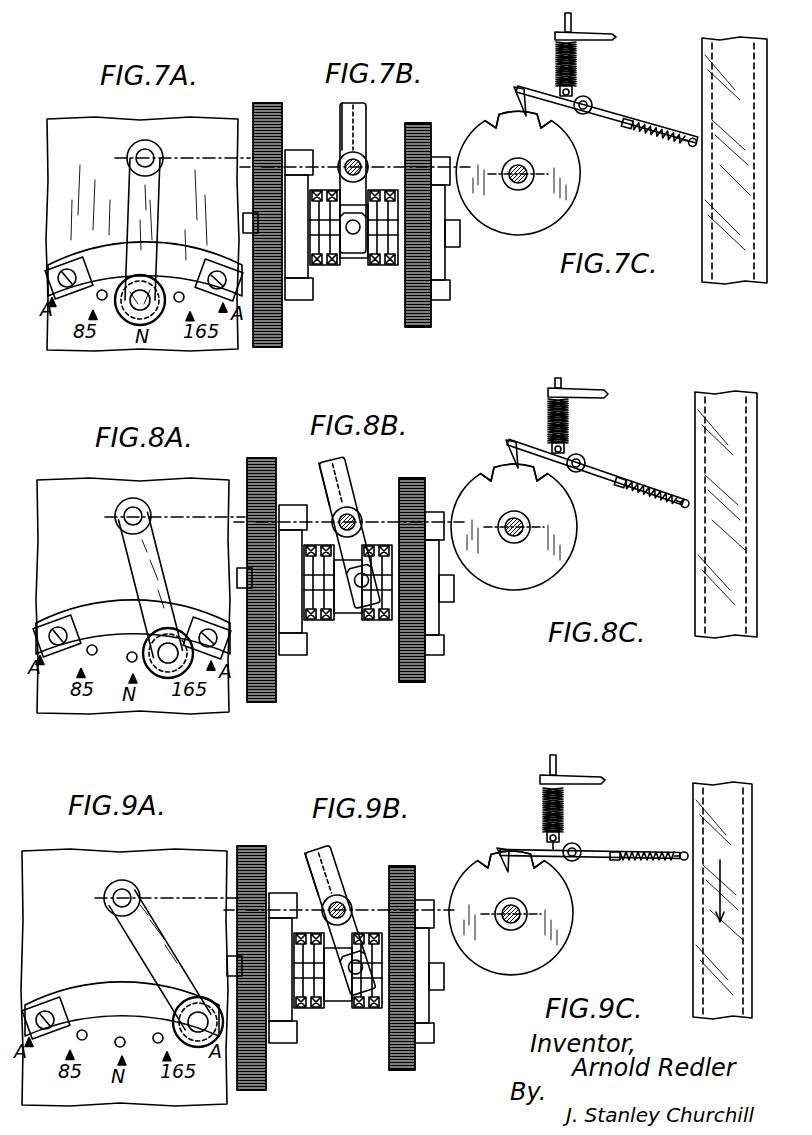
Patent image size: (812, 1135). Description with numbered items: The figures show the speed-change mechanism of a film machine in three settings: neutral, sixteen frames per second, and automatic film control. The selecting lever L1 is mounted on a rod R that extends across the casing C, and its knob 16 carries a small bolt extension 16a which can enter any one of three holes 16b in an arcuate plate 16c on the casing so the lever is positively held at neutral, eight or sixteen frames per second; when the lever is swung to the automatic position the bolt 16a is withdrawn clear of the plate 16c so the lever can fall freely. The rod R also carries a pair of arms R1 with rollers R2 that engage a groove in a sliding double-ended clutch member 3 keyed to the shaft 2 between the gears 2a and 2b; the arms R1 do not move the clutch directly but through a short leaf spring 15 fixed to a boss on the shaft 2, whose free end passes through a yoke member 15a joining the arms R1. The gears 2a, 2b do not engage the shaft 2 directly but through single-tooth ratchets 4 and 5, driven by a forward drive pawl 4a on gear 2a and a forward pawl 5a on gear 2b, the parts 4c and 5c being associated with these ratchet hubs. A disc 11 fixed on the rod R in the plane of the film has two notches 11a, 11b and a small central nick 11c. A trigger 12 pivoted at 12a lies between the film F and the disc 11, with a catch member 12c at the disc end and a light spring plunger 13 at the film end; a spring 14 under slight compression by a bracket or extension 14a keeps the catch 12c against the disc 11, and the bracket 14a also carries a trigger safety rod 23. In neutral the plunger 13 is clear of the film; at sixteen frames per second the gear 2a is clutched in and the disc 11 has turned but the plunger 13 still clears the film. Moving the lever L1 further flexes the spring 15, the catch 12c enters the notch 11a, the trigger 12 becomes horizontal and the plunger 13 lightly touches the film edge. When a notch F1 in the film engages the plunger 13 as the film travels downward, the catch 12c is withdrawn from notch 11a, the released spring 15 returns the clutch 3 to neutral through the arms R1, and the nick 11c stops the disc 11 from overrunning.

In FIG. 7B, the shaft 2 is at (455, 238).
In FIG. 8B, the shaft 2 is at (461, 599).
In FIG. 9B, the shaft 2 is at (449, 988).
In FIG. 7B, the gear 2a is at (412, 327).
In FIG. 8B, the gear 2a is at (408, 597).
In FIG. 9B, the gear 2a is at (404, 953).
In FIG. 7B, the gear 2b is at (266, 103).
In FIG. 8B, the gear 2b is at (256, 562).
In FIG. 9B, the gear 2b is at (245, 953).
In FIG. 7B, the sliding double-ended clutch member 3 is at (358, 255).
In FIG. 8B, the sliding double-ended clutch member 3 is at (347, 612).
In FIG. 9B, the sliding double-ended clutch member 3 is at (338, 997).
In FIG. 7B, the ratchet 4 is at (442, 265).
In FIG. 8B, the ratchet 4 is at (448, 597).
In FIG. 9B, the ratchet 4 is at (453, 982).
In FIG. 7B, the forward drive pawl 4a is at (445, 165).
In FIG. 8B, the forward drive pawl 4a is at (433, 499).
In FIG. 9B, the forward drive pawl 4a is at (430, 892).
In FIG. 7B, the hub flange 4c is at (442, 295).
In FIG. 8B, the hub flange 4c is at (453, 659).
In FIG. 9B, the hub flange 4c is at (442, 1033).
In FIG. 7B, the ratchet 5 is at (300, 265).
In FIG. 8B, the ratchet 5 is at (299, 594).
In FIG. 9B, the ratchet 5 is at (293, 979).
In FIG. 7B, the forward pawl 5a is at (300, 158).
In FIG. 8B, the forward pawl 5a is at (293, 503).
In FIG. 9B, the forward pawl 5a is at (284, 888).
In FIG. 7B, the hub flange 5c is at (295, 300).
In FIG. 8B, the hub flange 5c is at (294, 663).
In FIG. 9B, the hub flange 5c is at (285, 1049).
In FIG. 7C, the disc 11 is at (565, 192).
In FIG. 8C, the disc 11 is at (562, 545).
In FIG. 9C, the disc 11 is at (559, 934).
In FIG. 7C, the notch 11a is at (543, 128).
In FIG. 8C, the notch 11a is at (537, 478).
In FIG. 9C, the notch 11a is at (531, 862).
In FIG. 7C, the notch 11b is at (487, 118).
In FIG. 8C, the notch 11b is at (480, 488).
In FIG. 9C, the notch 11b is at (482, 870).
In FIG. 7C, the small nick 11c is at (512, 120).
In FIG. 8C, the small nick 11c is at (504, 470).
In FIG. 9C, the small nick 11c is at (480, 866).
In FIG. 7C, the trigger device 12 is at (600, 115).
In FIG. 8C, the trigger device 12 is at (605, 475).
In FIG. 9C, the trigger device 12 is at (602, 862).
In FIG. 7C, the pivot 12a is at (593, 107).
In FIG. 8C, the pivot 12a is at (585, 465).
In FIG. 9C, the pivot 12a is at (578, 850).
In FIG. 7C, the catch member 12c is at (517, 92).
In FIG. 8C, the catch member 12c is at (507, 450).
In FIG. 9C, the catch member 12c is at (510, 850).
In FIG. 7C, the light spring plunger 13 is at (700, 150).
In FIG. 8C, the light spring plunger 13 is at (687, 507).
In FIG. 9C, the light spring plunger 13 is at (683, 865).
In FIG. 7C, the spring 14 is at (580, 62).
In FIG. 8C, the spring 14 is at (575, 420).
In FIG. 9C, the spring 14 is at (565, 808).
In FIG. 7C, the bracket or extension 14a is at (605, 38).
In FIG. 8C, the bracket or extension 14a is at (596, 392).
In FIG. 9C, the bracket or extension 14a is at (575, 778).
In FIG. 7B, the leaf-spring 15 is at (368, 120).
In FIG. 8B, the leaf-spring 15 is at (335, 525).
In FIG. 9B, the leaf-spring 15 is at (329, 910).
In FIG. 7B, the yoke member 15a is at (362, 118).
In FIG. 8B, the yoke member 15a is at (367, 473).
In FIG. 9B, the yoke member 15a is at (349, 857).
In FIG. 7A, the knob 16 is at (132, 320).
In FIG. 8A, the knob 16 is at (166, 680).
In FIG. 9A, the knob 16 is at (195, 1047).
In FIG. 7A, the extension 16a is at (64, 266).
In FIG. 8A, the extension 16a is at (57, 625).
In FIG. 9A, the extension 16a is at (42, 1010).
In FIG. 7A, the holes 16b is at (102, 290).
In FIG. 8A, the holes 16b is at (130, 651).
In FIG. 9A, the holes 16b is at (157, 1033).
In FIG. 7A, the arcuate plate 16c is at (82, 300).
In FIG. 8A, the arcuate plate 16c is at (72, 650).
In FIG. 9A, the arcuate plate 16c is at (82, 1030).
In FIG. 7C, the trigger safety rod 23 is at (563, 22).
In FIG. 7A, the casing C is at (95, 130).
In FIG. 8A, the casing C is at (82, 485).
In FIG. 9A, the casing C is at (72, 860).
In FIG. 7A, the rod R is at (145, 150).
In FIG. 7B, the rod R is at (368, 170).
In FIG. 7C, the rod R is at (518, 191).
In FIG. 8A, the rod R is at (133, 508).
In FIG. 8B, the rod R is at (357, 515).
In FIG. 8C, the rod R is at (514, 544).
In FIG. 9A, the rod R is at (122, 890).
In FIG. 9B, the rod R is at (347, 901).
In FIG. 9C, the rod R is at (511, 931).
In FIG. 7B, the levers R1 is at (344, 128).
In FIG. 8B, the levers R1 is at (351, 484).
In FIG. 9B, the levers R1 is at (337, 873).
In FIG. 7B, the rollers R2 is at (365, 240).
In FIG. 8B, the rollers R2 is at (372, 614).
In FIG. 9B, the rollers R2 is at (366, 999).
In FIG. 7A, the lever L1 is at (137, 218).
In FIG. 8A, the lever L1 is at (135, 553).
In FIG. 9A, the lever L1 is at (140, 953).
In FIG. 7C, the film F is at (710, 48).
In FIG. 8C, the film F is at (735, 405).
In FIG. 9C, the film F is at (700, 782).
In FIG. 7C, the notch F1 is at (705, 75).
In FIG. 8C, the notch F1 is at (700, 432).
In FIG. 9C, the notch F1 is at (700, 825).